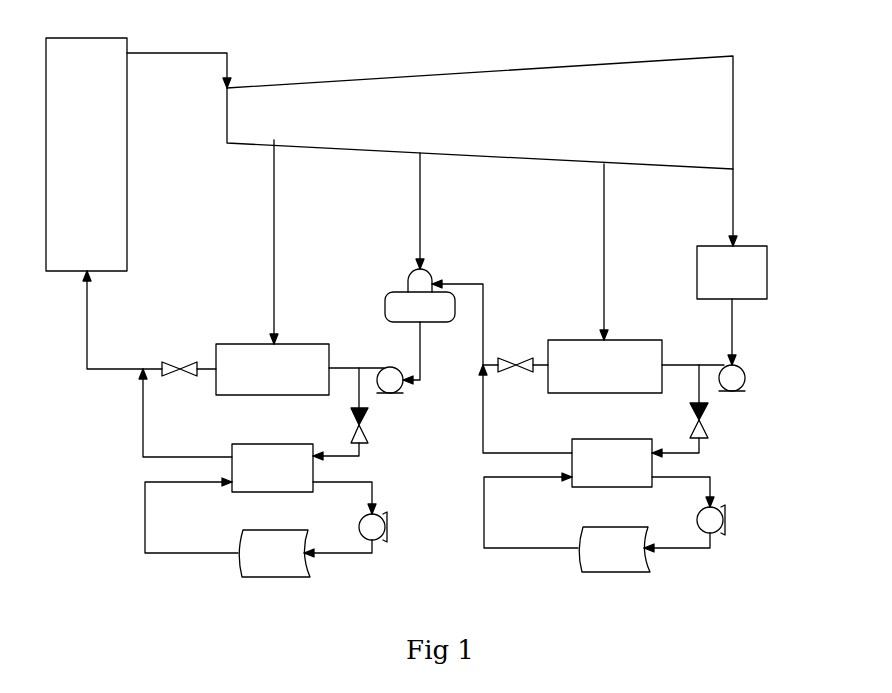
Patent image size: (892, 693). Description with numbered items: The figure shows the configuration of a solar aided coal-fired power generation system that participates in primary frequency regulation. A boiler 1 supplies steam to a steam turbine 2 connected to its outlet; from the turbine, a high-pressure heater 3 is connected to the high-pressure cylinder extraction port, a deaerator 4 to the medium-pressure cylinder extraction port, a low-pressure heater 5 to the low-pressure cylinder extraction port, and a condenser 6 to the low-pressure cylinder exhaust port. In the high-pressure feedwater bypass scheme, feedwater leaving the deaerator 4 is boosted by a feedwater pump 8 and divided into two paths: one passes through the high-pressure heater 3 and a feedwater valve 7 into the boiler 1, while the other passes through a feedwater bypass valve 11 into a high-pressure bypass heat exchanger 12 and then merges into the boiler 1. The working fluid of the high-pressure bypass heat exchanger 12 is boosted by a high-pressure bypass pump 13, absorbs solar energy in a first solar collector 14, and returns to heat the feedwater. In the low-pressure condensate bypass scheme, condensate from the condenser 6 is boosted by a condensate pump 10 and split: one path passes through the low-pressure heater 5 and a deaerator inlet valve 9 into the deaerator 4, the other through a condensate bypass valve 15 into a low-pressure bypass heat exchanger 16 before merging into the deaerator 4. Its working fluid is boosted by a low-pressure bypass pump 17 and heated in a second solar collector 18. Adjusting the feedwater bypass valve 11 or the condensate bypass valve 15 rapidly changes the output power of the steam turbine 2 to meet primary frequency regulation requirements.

The boiler 1 is at (109, 154).
The steam turbine 2 is at (480, 90).
The high-pressure heater 3 is at (287, 342).
The deaerator 4 is at (445, 271).
The low-pressure heater 5 is at (616, 342).
The condenser 6 is at (761, 248).
The feedwater valve 7 is at (177, 398).
The feedwater pump 8 is at (414, 396).
The deaerator inlet valve 9 is at (514, 394).
The condensate pump 10 is at (755, 393).
The feedwater bypass valve 11 is at (390, 444).
The high-pressure bypass heat exchanger 12 is at (244, 478).
The high-pressure bypass pump 13 is at (400, 540).
The first solar collector 14 is at (237, 562).
The condensate bypass valve 15 is at (728, 439).
The low-pressure bypass heat exchanger 16 is at (583, 475).
The low-pressure bypass pump 17 is at (739, 534).
The second solar collector 18 is at (581, 560).